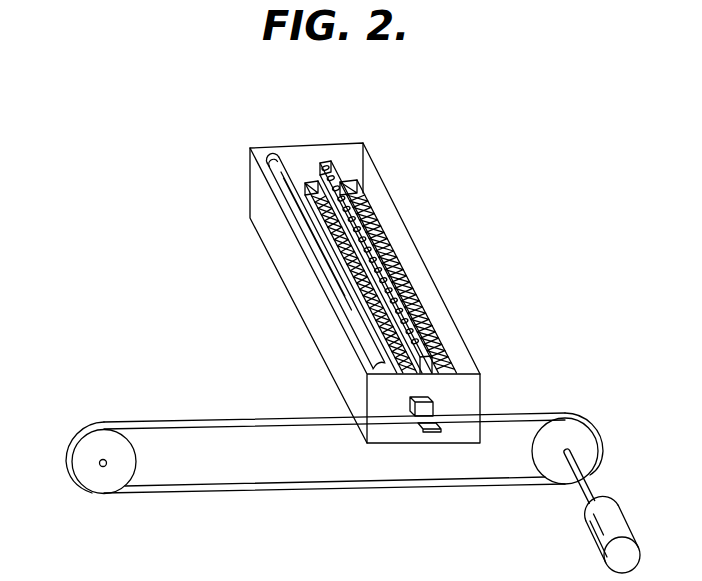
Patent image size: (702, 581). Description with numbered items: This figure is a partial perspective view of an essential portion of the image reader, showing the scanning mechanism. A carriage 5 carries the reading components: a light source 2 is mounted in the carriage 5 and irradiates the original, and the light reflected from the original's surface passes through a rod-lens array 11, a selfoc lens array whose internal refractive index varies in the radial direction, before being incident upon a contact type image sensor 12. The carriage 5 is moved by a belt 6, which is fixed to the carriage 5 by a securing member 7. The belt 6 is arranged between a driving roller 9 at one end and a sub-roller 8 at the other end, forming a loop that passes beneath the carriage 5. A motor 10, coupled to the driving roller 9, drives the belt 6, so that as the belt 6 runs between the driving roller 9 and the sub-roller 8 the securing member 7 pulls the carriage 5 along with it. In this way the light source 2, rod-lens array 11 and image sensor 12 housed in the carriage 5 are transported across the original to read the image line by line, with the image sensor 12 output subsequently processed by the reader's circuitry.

The light source 2 is at (284, 178).
The carriage 5 is at (310, 302).
The belt 6 is at (520, 415).
The securing member 7 is at (429, 433).
The sub-roller 8 is at (100, 446).
The driving roller 9 is at (586, 448).
The motor 10 is at (620, 526).
The rod-lens array 11 is at (331, 160).
The image sensor 12 is at (311, 183).